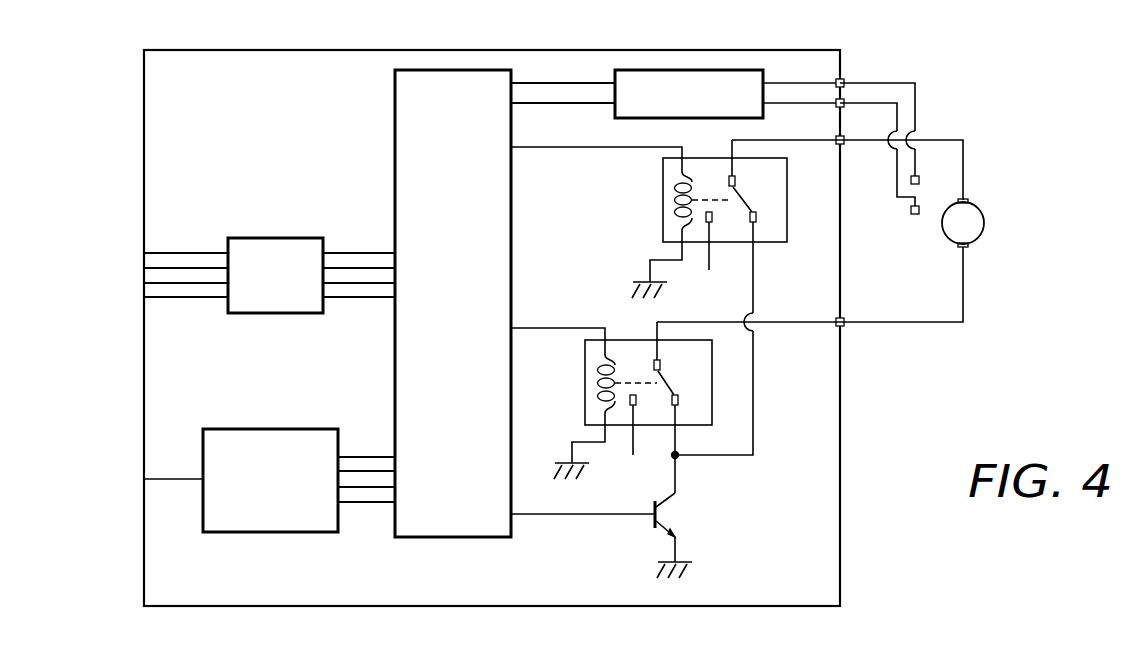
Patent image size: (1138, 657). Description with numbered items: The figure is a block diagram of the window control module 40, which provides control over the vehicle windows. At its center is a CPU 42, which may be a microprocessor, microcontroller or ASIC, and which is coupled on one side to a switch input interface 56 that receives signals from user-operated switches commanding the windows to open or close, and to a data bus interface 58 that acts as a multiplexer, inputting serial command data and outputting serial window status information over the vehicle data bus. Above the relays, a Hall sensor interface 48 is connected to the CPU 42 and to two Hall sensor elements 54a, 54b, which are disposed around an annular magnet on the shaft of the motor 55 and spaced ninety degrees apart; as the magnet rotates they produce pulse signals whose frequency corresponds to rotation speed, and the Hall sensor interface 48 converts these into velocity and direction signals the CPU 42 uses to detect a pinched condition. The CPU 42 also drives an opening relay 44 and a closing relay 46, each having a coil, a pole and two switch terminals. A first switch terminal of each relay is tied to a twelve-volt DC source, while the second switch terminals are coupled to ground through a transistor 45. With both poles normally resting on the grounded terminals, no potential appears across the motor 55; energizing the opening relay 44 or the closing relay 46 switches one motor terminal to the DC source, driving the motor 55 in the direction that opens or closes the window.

The window control module 40 is at (840, 548).
The CPU 42 is at (395, 131).
The opening relay 44 is at (663, 198).
The transistor 45 is at (652, 520).
The closing relay 46 is at (585, 357).
The Hall sensor interface 48 is at (712, 70).
The Hall sensor element 54a is at (919, 181).
The Hall sensor element 54b is at (915, 214).
The motor 55 is at (984, 223).
The switch input interface 56 is at (275, 313).
The data bus interface 58 is at (270, 532).